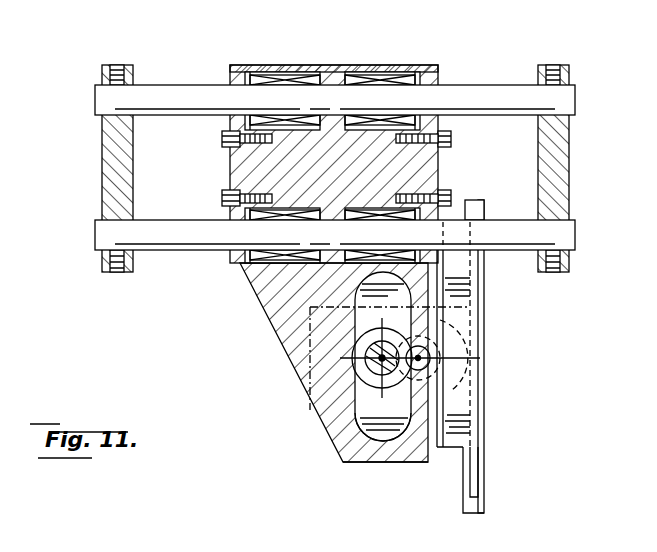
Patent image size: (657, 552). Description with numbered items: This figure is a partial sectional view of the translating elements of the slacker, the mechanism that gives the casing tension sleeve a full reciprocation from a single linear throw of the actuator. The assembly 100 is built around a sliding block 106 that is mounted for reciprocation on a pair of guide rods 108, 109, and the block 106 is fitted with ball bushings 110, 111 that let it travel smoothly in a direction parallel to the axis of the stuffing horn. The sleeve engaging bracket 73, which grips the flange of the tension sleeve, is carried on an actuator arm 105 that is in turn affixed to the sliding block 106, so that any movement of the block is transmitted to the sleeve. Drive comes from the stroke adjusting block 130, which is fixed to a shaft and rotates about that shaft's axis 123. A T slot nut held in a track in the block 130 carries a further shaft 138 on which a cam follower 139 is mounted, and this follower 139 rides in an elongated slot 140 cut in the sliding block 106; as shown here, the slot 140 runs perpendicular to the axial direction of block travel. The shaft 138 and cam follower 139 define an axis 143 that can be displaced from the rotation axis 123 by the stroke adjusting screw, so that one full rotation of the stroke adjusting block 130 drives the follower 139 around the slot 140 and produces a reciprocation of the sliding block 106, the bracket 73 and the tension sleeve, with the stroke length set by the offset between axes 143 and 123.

The sleeve engaging bracket 73 is at (486, 473).
The bearing assembly 100 is at (522, 352).
The actuator arm 105 is at (470, 418).
The sliding block 106 is at (387, 464).
The guide rod 108 is at (196, 250).
The guide rod 109 is at (160, 95).
The ball bushing 110 is at (335, 264).
The ball bushing 111 is at (362, 68).
The axis of rotation of the shaft 123 is at (480, 385).
The stroke adjusting block 130 is at (470, 335).
The shaft 138 is at (370, 337).
The cam follower 139 is at (355, 405).
The elongated slot 140 is at (345, 450).
The axis 143 is at (376, 358).